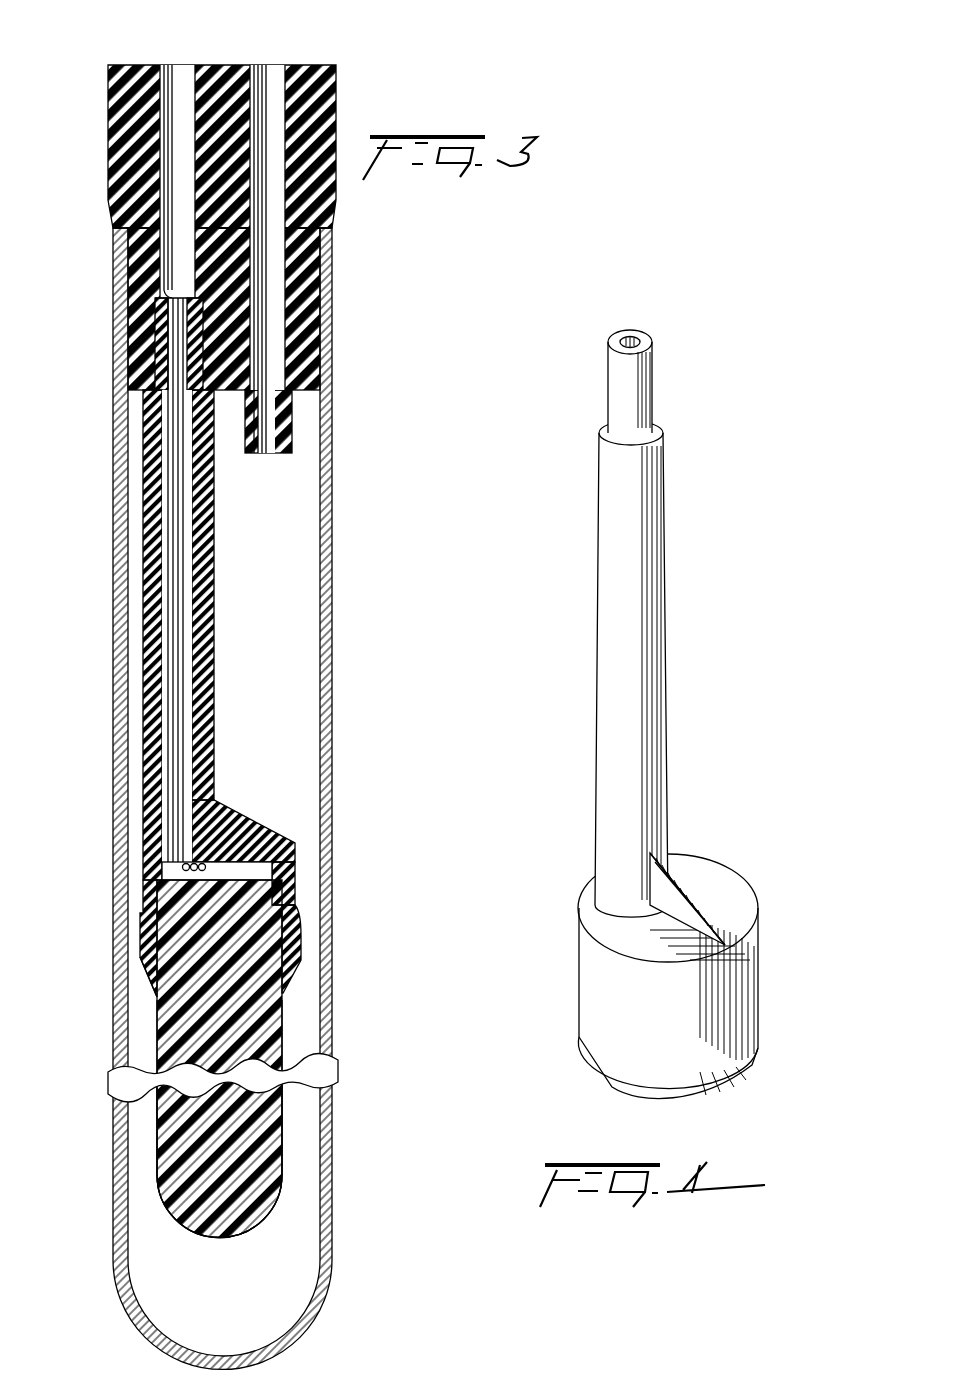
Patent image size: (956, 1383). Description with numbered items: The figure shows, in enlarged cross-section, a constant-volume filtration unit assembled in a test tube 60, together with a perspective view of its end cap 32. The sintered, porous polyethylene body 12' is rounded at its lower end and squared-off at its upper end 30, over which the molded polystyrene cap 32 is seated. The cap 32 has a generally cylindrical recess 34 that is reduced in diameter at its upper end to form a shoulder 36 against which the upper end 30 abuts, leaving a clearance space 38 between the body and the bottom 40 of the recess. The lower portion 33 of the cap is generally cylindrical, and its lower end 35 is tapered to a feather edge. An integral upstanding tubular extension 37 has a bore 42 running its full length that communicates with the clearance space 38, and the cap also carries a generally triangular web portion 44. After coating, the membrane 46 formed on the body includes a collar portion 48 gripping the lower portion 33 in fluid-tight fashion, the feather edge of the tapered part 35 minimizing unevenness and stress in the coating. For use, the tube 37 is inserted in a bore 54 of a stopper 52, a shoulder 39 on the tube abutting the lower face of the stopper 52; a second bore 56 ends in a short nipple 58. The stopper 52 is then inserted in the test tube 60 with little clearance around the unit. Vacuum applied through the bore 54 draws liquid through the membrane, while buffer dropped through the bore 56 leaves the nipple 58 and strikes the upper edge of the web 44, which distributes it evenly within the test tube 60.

In FIG. 3, the sintered porous polyethylene body 12' is at (147, 1153).
In FIG. 3, the upper end of the body 30 is at (283, 838).
In FIG. 3, the molded polystyrene cap 32 is at (229, 768).
In FIG. 4, the molded polystyrene cap 32 is at (662, 705).
In FIG. 3, the lower portion of the cap 33 is at (160, 903).
In FIG. 4, the lower portion of the cap 33 is at (590, 988).
In FIG. 3, the cylindrical recess 34 is at (143, 957).
In FIG. 3, the tapered lower end 35 is at (150, 980).
In FIG. 4, the tapered lower end 35 is at (613, 1078).
In FIG. 3, the shoulder 36 is at (280, 903).
In FIG. 3, the tubular extension 37 is at (150, 442).
In FIG. 4, the tubular extension 37 is at (605, 622).
In FIG. 3, the clearance space 38 is at (165, 870).
In FIG. 3, the shoulder 39 is at (140, 378).
In FIG. 4, the shoulder 39 is at (663, 430).
In FIG. 3, the bottom of the recess 40 is at (190, 860).
In FIG. 4, the bore 42 is at (637, 340).
In FIG. 3, the web portion 44 is at (240, 812).
In FIG. 4, the web portion 44 is at (687, 875).
In FIG. 3, the membrane 46 is at (282, 1027).
In FIG. 3, the collar portion 48 is at (300, 938).
In FIG. 3, the stopper 52 is at (335, 95).
In FIG. 3, the bore 54 is at (178, 75).
In FIG. 3, the bore 56 is at (267, 73).
In FIG. 3, the nipple 58 is at (290, 433).
In FIG. 3, the test tube 60 is at (113, 505).